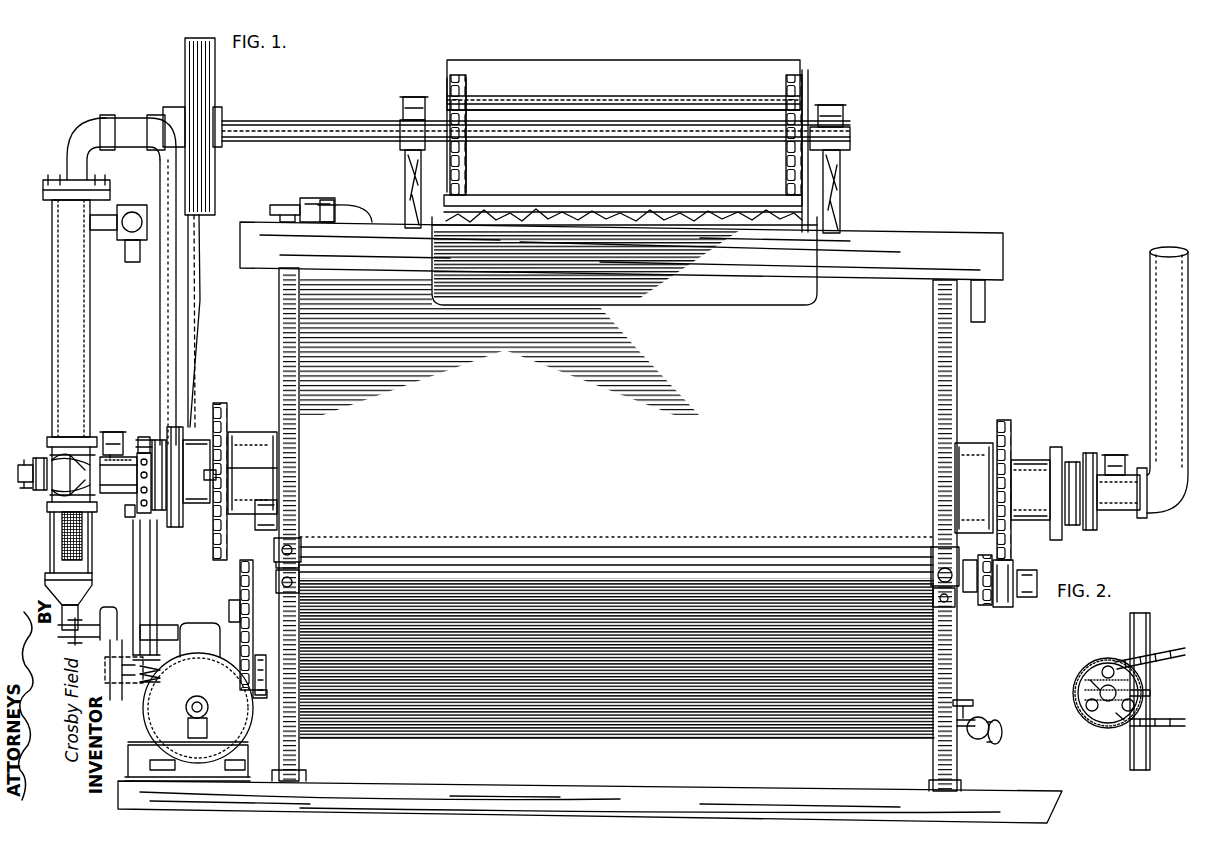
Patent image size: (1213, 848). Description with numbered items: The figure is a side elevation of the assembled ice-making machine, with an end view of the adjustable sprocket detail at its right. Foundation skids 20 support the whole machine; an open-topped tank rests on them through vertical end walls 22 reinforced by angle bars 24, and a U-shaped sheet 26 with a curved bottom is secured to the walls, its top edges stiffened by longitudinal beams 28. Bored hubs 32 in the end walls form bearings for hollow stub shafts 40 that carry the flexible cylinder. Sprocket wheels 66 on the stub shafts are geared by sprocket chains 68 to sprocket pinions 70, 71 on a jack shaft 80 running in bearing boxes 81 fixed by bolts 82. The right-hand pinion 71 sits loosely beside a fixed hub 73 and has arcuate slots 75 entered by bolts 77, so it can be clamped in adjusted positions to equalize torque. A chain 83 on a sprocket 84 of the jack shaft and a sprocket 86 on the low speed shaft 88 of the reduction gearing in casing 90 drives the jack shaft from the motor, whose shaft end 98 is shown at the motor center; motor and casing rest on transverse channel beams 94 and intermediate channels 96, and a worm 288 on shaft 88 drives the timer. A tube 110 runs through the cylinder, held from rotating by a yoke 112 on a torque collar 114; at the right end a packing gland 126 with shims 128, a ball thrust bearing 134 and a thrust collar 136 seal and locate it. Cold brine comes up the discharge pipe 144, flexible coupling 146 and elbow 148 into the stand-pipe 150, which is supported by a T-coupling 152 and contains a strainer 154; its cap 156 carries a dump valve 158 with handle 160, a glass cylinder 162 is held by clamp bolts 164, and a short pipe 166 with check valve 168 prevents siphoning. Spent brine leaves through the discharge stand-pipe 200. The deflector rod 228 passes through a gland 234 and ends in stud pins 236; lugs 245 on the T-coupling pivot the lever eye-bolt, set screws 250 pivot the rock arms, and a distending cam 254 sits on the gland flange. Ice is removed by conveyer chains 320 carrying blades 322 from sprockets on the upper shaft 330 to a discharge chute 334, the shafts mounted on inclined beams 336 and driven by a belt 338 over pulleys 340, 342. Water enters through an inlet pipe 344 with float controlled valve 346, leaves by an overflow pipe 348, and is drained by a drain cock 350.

In FIG. 1, the foundation skid 20 is at (876, 806).
In FIG. 1, the end wall 22 is at (296, 752).
In FIG. 1, the angle bar 24 is at (272, 775).
In FIG. 2, the angle bar 24 is at (1136, 750).
In FIG. 1, the U-shaped sheet 26 is at (345, 310).
In FIG. 1, the longitudinal beam 28 is at (968, 240).
In FIG. 1, the bored hub 32 is at (250, 440).
In FIG. 1, the hollow stub shaft 40 is at (203, 440).
In FIG. 1, the sprocket wheel 66 is at (222, 405).
In FIG. 1, the sprocket chain 68 is at (266, 510).
In FIG. 2, the sprocket chain 68 is at (1168, 650).
In FIG. 1, the sprocket pinion 70 is at (240, 632).
In FIG. 1, the sprocket pinion 71 is at (982, 598).
In FIG. 2, the sprocket pinion 71 is at (1147, 690).
In FIG. 1, the fixed hub 73 is at (1012, 605).
In FIG. 2, the fixed hub 73 is at (1078, 680).
In FIG. 2, the arcuate slot 75 is at (1090, 668).
In FIG. 1, the bolt 77 is at (1032, 595).
In FIG. 2, the bolt 77 is at (1108, 665).
In FIG. 1, the jack shaft 80 is at (586, 548).
In FIG. 2, the jack shaft 80 is at (1116, 692).
In FIG. 1, the bearing box 81 is at (295, 540).
In FIG. 1, the bolt 82 is at (280, 590).
In FIG. 1, the sprocket chain 83 is at (244, 660).
In FIG. 1, the sprocket 84 is at (288, 520).
In FIG. 1, the sprocket 86 is at (257, 656).
In FIG. 1, the low speed shaft 88 is at (264, 697).
In FIG. 1, the gear casing 90 is at (200, 640).
In FIG. 1, the transverse channel beam 94 is at (205, 780).
In FIG. 1, the intermediate channel 96 is at (246, 762).
In FIG. 1, the motor shaft hub 98 is at (203, 707).
In FIG. 1, the tube 110 is at (118, 482).
In FIG. 1, the yoke 112 is at (138, 568).
In FIG. 1, the torque collar 114 is at (146, 437).
In FIG. 1, the packing gland 126 is at (170, 420).
In FIG. 1, the shim 128 is at (1054, 450).
In FIG. 1, the ball thrust bearing 134 is at (158, 440).
In FIG. 1, the thrust collar 136 is at (1105, 468).
In FIG. 1, the discharge pipe 144 is at (165, 372).
In FIG. 1, the flexible coupling 146 is at (128, 116).
In FIG. 1, the elbow 148 is at (78, 150).
In FIG. 1, the stand-pipe 150 is at (60, 320).
In FIG. 1, the T-coupling 152 is at (58, 505).
In FIG. 1, the strainer 154 is at (62, 547).
In FIG. 1, the cap 156 is at (60, 598).
In FIG. 1, the dump valve 158 is at (85, 620).
In FIG. 1, the handle 160 is at (117, 690).
In FIG. 1, the glass cylinder 162 is at (55, 560).
In FIG. 1, the clamp bolt 164 is at (90, 565).
In FIG. 1, the short pipe 166 is at (110, 245).
In FIG. 1, the check valve 168 is at (133, 206).
In FIG. 1, the discharge stand-pipe 200 is at (1160, 342).
In FIG. 1, the deflector rod 228 is at (16, 468).
In FIG. 1, the gland 234 is at (40, 458).
In FIG. 1, the stud pin 236 is at (28, 486).
In FIG. 1, the lug 245 is at (65, 475).
In FIG. 1, the set screw 250 is at (118, 432).
In FIG. 1, the distending cam 254 is at (234, 468).
In FIG. 1, the worm 288 is at (150, 677).
In FIG. 1, the conveyer chain 320 is at (446, 78).
In FIG. 1, the blade 322 is at (622, 75).
In FIG. 1, the upper shaft 330 is at (322, 122).
In FIG. 1, the discharge chute 334 is at (663, 290).
In FIG. 1, the inclined beam 336 is at (405, 160).
In FIG. 1, the belt 338 is at (203, 282).
In FIG. 1, the pulley 340 is at (188, 60).
In FIG. 1, the pulley 342 is at (180, 600).
In FIG. 1, the inlet pipe 344 is at (290, 205).
In FIG. 1, the float controlled valve 346 is at (338, 210).
In FIG. 1, the overflow pipe 348 is at (986, 300).
In FIG. 1, the drain cock 350 is at (978, 718).